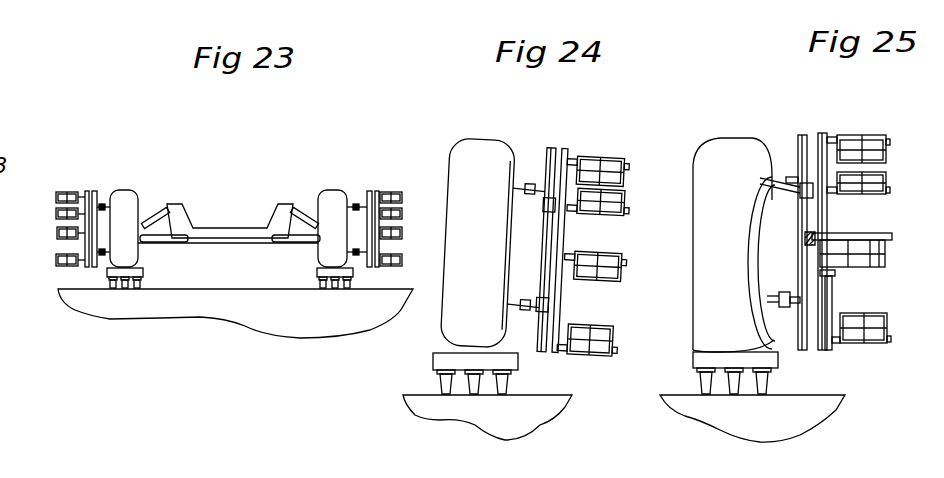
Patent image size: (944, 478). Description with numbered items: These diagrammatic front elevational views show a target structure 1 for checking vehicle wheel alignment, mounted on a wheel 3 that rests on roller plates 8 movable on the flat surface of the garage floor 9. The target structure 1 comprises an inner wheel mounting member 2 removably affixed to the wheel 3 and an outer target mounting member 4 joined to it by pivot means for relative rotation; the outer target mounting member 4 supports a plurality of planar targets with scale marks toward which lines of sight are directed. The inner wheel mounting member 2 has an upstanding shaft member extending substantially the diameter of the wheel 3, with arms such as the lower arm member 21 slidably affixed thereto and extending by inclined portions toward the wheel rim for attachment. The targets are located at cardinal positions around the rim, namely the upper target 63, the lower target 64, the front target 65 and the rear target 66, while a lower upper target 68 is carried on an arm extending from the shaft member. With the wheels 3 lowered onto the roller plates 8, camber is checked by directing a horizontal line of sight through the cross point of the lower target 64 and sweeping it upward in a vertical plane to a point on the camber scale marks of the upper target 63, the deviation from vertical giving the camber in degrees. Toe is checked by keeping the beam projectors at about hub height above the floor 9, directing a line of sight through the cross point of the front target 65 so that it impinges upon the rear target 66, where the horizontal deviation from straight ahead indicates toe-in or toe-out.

In FIG. 23, the target structure 1 is at (374, 189).
In FIG. 24, the target structure 1 is at (602, 302).
In FIG. 25, the target structure 1 is at (847, 304).
In FIG. 23, the inner wheel mounting member 2 is at (96, 191).
In FIG. 24, the inner wheel mounting member 2 is at (553, 148).
In FIG. 25, the inner wheel mounting member 2 is at (803, 135).
In FIG. 23, the wheel 3 is at (126, 190).
In FIG. 24, the wheel 3 is at (489, 144).
In FIG. 25, the wheel 3 is at (742, 138).
In FIG. 23, the outer target mounting member 4 is at (87, 191).
In FIG. 24, the outer target mounting member 4 is at (566, 148).
In FIG. 25, the outer target mounting member 4 is at (823, 133).
In FIG. 23, the roller plates 8 is at (143, 273).
In FIG. 24, the roller plates 8 is at (433, 362).
In FIG. 25, the roller plates 8 is at (693, 361).
In FIG. 23, the garage floor 9 is at (266, 322).
In FIG. 24, the garage floor 9 is at (497, 418).
In FIG. 25, the garage floor 9 is at (726, 418).
In FIG. 25, the lower arm member 21 is at (776, 306).
In FIG. 23, the upper target 63 is at (56, 198).
In FIG. 24, the upper target 63 is at (625, 172).
In FIG. 25, the upper target 63 is at (887, 155).
In FIG. 23, the lower target 64 is at (56, 260).
In FIG. 24, the lower target 64 is at (613, 335).
In FIG. 25, the lower target 64 is at (889, 327).
In FIG. 23, the front target 65 is at (57, 234).
In FIG. 24, the front target 65 is at (622, 267).
In FIG. 25, the front target 65 is at (855, 268).
In FIG. 25, the rear target 66 is at (892, 250).
In FIG. 23, the lower upper target 68 is at (56, 215).
In FIG. 24, the lower upper target 68 is at (625, 202).
In FIG. 25, the lower upper target 68 is at (887, 183).